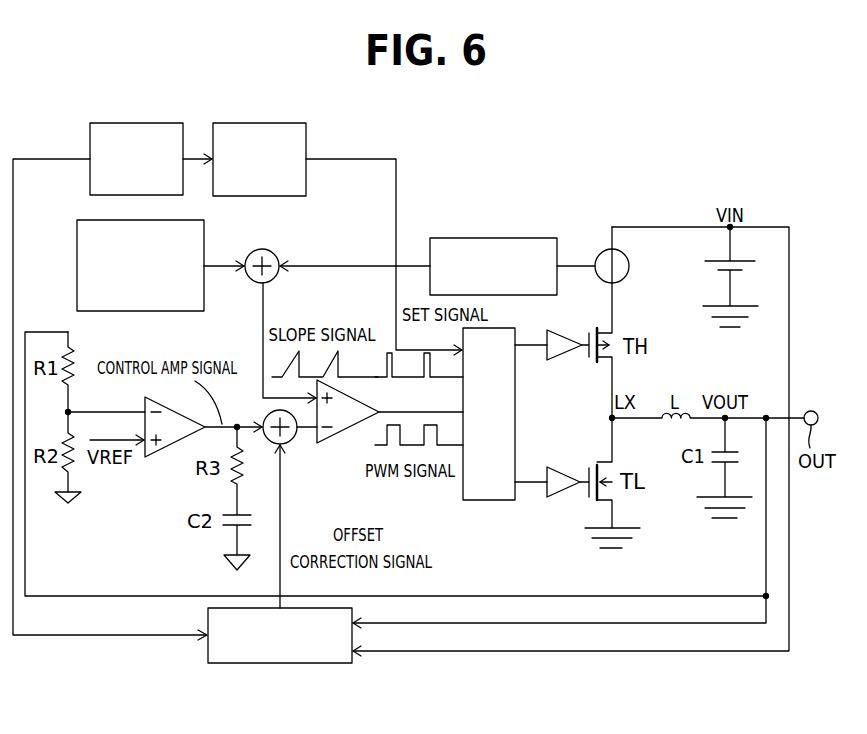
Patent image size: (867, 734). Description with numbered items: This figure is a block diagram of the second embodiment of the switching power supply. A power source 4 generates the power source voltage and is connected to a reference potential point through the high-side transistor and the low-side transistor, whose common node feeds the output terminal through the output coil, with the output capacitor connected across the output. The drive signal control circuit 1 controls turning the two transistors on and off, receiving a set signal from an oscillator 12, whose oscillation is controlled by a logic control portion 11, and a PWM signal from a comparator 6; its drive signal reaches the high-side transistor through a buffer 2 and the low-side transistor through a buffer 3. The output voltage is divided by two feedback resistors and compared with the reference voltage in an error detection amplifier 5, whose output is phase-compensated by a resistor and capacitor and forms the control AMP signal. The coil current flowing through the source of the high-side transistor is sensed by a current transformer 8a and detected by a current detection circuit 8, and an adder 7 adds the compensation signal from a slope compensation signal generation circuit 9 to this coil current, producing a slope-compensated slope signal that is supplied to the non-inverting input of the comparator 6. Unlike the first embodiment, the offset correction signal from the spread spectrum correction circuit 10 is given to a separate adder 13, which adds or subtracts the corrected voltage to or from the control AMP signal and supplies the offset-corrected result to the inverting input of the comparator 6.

The drive signal control circuit 1 is at (516, 417).
The buffer 2 is at (568, 333).
The buffer 3 is at (567, 471).
The power source 4 is at (705, 262).
The error detection amplifier 5 is at (172, 452).
The comparator 6 is at (357, 396).
The adder 7 is at (273, 254).
The current detection circuit 8 is at (493, 238).
The current transformer 8a is at (630, 266).
The slope compensation signal generation circuit 9 is at (206, 247).
The spread spectrum correction circuit 10 is at (283, 664).
The logic control portion 11 is at (142, 123).
The oscillator 12 is at (261, 123).
The adder 13 is at (291, 440).